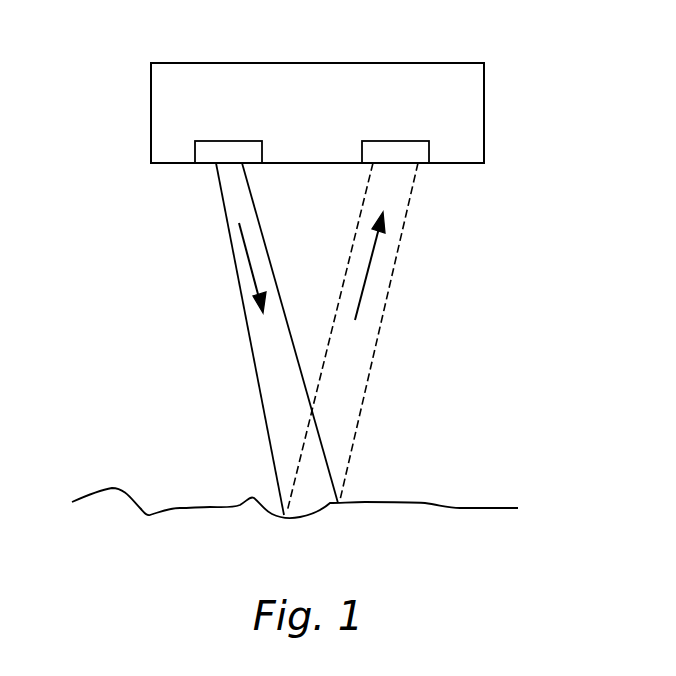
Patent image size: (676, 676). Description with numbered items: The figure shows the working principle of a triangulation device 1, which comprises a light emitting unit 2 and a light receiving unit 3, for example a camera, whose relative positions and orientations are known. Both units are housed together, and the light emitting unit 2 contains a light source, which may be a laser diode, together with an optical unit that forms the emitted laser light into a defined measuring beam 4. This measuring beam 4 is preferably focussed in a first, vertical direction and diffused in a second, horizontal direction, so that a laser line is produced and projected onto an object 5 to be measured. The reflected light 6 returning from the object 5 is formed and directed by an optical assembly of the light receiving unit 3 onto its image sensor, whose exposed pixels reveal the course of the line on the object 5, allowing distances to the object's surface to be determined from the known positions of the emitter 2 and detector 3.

The triangulation device 1 is at (463, 86).
The light emitting unit 2 is at (207, 150).
The light receiving unit 3 is at (412, 153).
The measuring beam 4 is at (252, 318).
The object 5 is at (197, 510).
The reflected light 6 is at (375, 318).